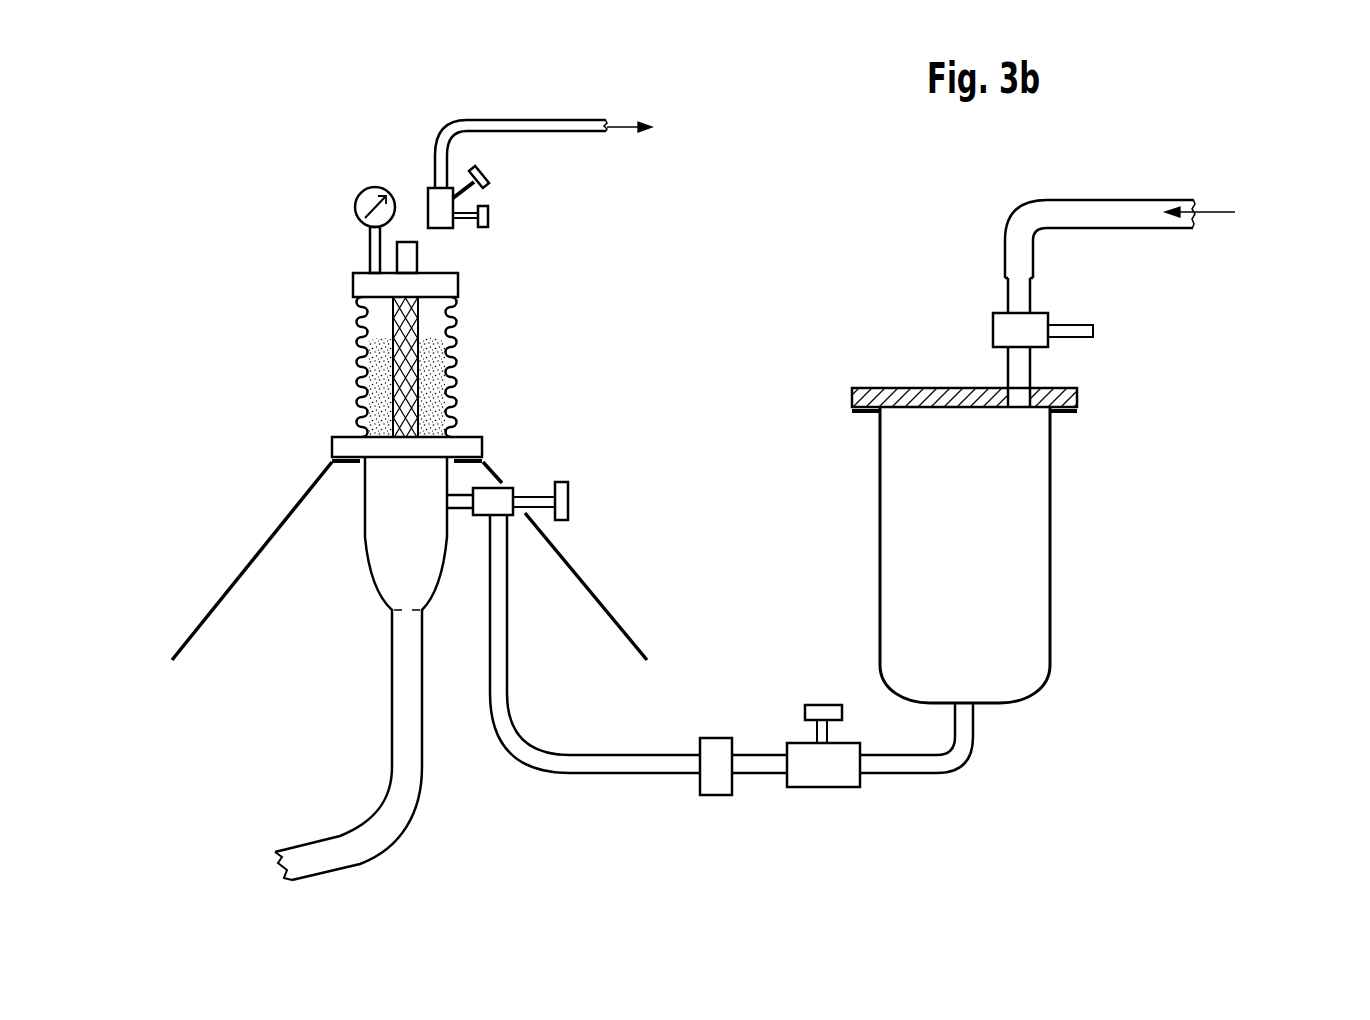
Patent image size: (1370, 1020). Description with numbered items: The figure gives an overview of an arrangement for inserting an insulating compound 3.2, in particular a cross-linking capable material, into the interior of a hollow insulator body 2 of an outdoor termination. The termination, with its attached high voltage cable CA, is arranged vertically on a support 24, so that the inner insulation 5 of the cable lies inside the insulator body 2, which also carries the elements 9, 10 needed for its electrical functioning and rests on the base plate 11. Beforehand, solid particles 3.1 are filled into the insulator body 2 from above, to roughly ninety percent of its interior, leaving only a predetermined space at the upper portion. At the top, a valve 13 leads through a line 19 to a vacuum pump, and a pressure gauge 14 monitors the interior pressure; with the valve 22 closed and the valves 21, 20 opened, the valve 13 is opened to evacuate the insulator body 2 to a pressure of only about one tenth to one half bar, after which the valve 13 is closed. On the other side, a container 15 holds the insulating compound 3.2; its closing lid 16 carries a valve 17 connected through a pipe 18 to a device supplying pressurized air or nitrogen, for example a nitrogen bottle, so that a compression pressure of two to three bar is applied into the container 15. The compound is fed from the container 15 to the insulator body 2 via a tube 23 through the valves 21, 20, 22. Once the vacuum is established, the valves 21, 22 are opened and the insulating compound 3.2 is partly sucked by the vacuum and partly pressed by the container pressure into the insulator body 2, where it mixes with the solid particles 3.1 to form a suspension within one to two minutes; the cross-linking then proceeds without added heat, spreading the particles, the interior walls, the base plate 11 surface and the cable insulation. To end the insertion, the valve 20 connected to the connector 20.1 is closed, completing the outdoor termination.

The insulator body 2 is at (358, 348).
The solid particles 3.1 is at (428, 367).
The insulating compound 3.2 is at (1025, 640).
The inner insulation 5 is at (397, 387).
The element 9 is at (407, 243).
The element 10 is at (368, 287).
The base plate 11 is at (337, 452).
The valve 13 is at (450, 225).
The pressure gauge 14 is at (358, 198).
The container 15 is at (1052, 505).
The closing lid 16 is at (867, 388).
The valve 17 is at (1000, 333).
The pipe 18 is at (1093, 213).
The vacuum pipe 19 is at (570, 132).
The valve 20 is at (512, 492).
The connector 20.1 is at (455, 497).
The valve 21 is at (715, 748).
The valve 22 is at (802, 760).
The tube 23 is at (502, 700).
The support 24 is at (253, 558).
The high voltage cable CA is at (303, 858).